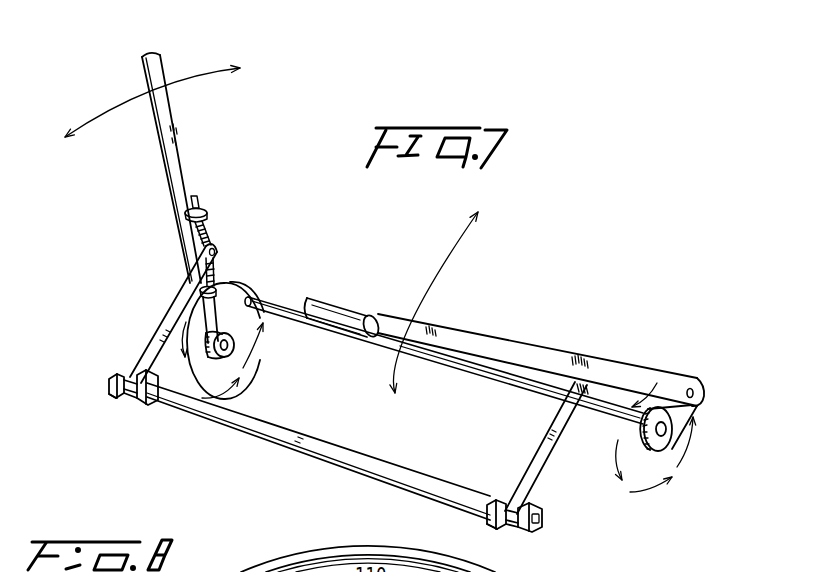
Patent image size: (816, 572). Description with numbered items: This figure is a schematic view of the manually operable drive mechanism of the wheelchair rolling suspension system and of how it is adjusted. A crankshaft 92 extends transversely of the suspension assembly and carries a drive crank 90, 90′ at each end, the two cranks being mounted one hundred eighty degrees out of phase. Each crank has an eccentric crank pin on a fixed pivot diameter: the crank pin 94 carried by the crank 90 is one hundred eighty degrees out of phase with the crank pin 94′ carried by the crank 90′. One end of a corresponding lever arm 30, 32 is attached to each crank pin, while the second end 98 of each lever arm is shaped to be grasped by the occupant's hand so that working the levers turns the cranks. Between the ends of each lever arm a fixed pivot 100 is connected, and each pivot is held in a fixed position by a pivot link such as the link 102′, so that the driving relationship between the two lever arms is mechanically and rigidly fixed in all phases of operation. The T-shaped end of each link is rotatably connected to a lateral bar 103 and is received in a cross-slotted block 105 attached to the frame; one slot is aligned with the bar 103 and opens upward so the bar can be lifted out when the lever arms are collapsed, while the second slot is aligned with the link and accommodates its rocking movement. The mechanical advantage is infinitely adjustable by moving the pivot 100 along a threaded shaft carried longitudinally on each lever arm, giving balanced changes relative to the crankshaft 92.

The lever arm 30 is at (467, 337).
The lever arm 32 is at (186, 165).
The drive crank 90 is at (672, 438).
The drive crank 90′ is at (254, 282).
The crankshaft 92 is at (496, 380).
The crank pin 94 is at (689, 388).
The crank pin 94′ is at (233, 348).
The second end of lever arm 98 is at (326, 310).
The fixed pivot 100 is at (216, 244).
The pivot link 102′ is at (170, 318).
The lateral bar 103 is at (292, 452).
The cross-slotted block 105 is at (117, 393).